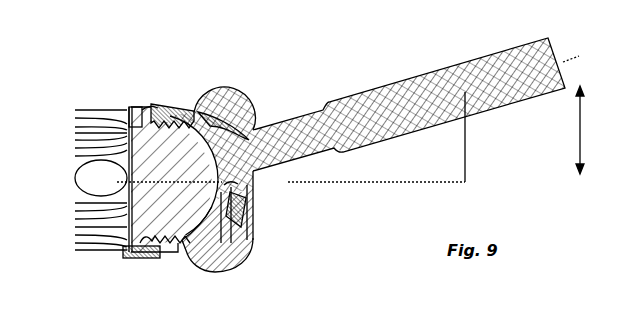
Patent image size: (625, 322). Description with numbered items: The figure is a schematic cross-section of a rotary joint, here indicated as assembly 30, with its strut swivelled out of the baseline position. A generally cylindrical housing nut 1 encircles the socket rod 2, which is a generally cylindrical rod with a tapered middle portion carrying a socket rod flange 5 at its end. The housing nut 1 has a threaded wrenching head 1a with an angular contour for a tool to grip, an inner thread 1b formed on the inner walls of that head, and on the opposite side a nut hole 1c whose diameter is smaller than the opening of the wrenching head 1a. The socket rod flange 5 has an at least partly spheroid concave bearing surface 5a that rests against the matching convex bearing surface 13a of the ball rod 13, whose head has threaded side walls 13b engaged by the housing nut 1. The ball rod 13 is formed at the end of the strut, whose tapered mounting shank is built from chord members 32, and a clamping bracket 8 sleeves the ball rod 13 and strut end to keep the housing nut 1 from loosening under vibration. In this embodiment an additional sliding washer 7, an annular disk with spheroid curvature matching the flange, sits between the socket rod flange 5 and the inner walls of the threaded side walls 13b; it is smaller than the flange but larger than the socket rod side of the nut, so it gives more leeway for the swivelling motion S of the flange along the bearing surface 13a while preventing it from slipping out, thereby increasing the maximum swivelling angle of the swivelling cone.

The housing nut 1 is at (238, 268).
The threaded wrenching head 1a is at (161, 259).
The inner thread 1b is at (184, 248).
The nut hole 1c is at (256, 212).
The socket rod 2 is at (490, 55).
The socket rod flange 5 is at (243, 123).
The concave bearing surface 5a is at (224, 182).
The sliding washer 7 is at (252, 206).
The clamping bracket 8 is at (134, 262).
The ball rod 13 is at (150, 110).
The convex bearing surface 13a is at (207, 208).
The threaded side walls 13b is at (172, 104).
The ball joint assembly 30 is at (208, 61).
The chord members 32 is at (83, 252).
The swivelling motion S is at (578, 158).